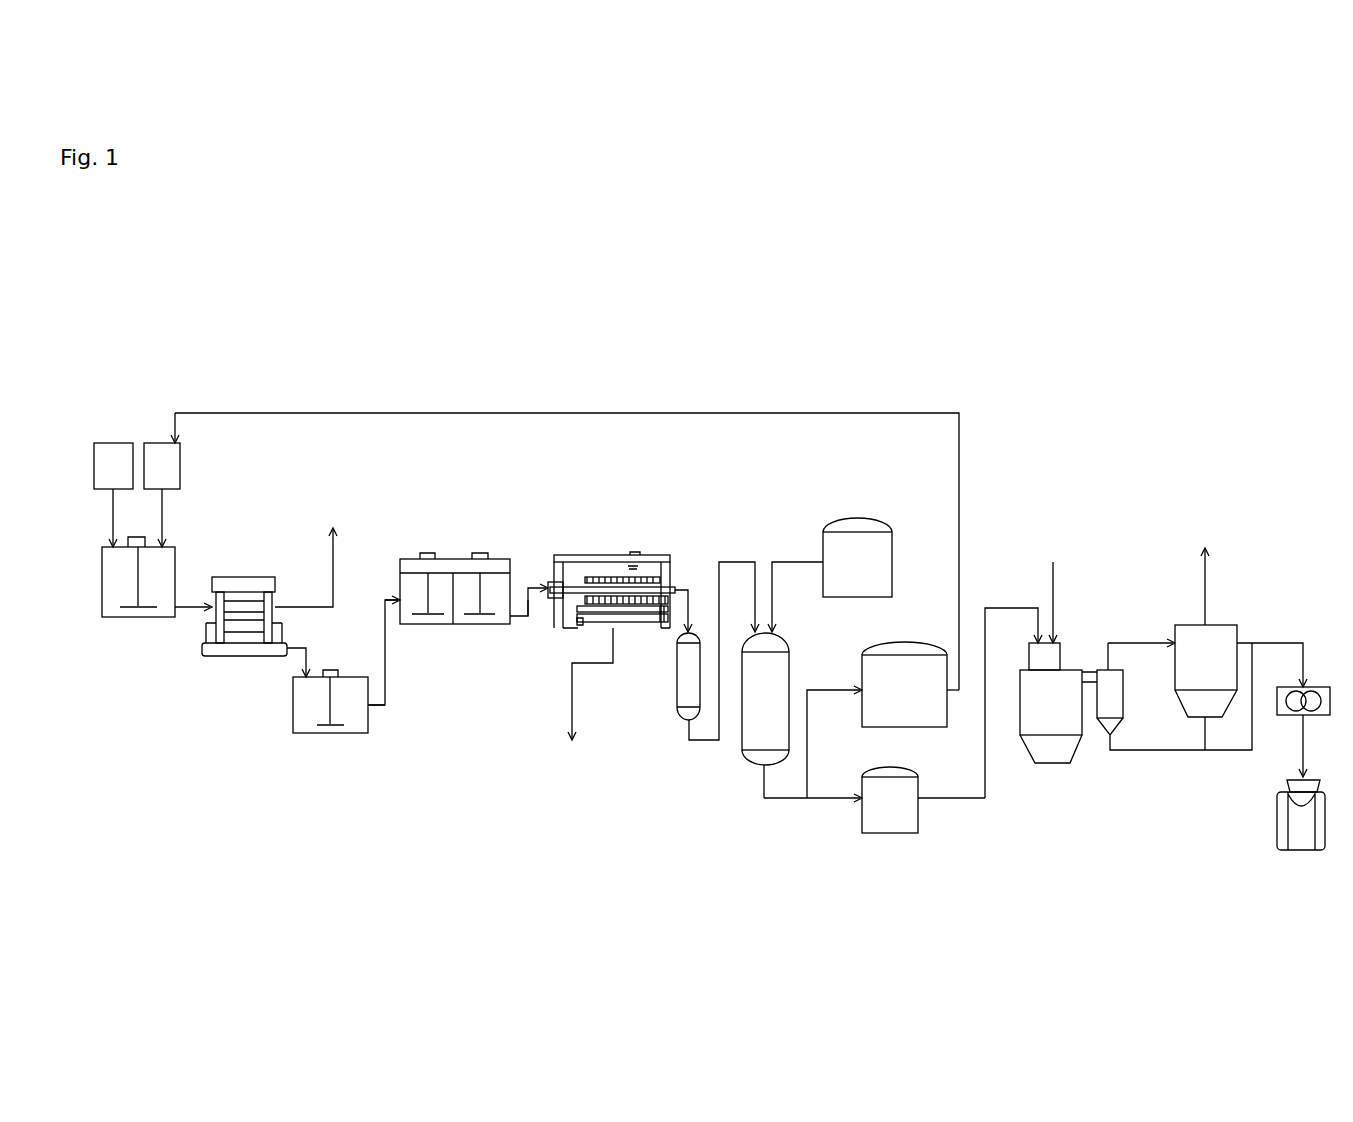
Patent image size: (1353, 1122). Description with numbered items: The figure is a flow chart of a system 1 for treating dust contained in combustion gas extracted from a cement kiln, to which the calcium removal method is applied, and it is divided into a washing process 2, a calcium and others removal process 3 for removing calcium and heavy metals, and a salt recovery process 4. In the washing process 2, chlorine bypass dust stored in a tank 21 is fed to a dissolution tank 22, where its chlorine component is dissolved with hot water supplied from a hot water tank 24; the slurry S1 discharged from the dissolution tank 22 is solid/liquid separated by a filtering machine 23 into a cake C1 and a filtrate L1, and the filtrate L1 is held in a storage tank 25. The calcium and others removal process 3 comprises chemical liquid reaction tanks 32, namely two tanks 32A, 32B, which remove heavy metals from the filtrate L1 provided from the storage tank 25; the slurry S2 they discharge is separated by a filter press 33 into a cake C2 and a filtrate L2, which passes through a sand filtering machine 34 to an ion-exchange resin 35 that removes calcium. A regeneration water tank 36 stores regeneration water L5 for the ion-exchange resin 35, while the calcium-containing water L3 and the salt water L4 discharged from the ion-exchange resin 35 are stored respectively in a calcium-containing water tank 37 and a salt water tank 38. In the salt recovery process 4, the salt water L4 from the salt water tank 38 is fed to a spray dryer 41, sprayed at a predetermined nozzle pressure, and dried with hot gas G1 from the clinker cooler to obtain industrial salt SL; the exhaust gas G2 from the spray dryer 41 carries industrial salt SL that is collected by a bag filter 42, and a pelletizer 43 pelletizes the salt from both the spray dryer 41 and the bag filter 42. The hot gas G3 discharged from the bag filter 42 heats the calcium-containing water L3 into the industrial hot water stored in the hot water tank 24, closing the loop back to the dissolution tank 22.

The system for treating dust contained in extracted cement kiln combustion gas 1 is at (737, 361).
The washing process 2 is at (228, 804).
The calcium and others removal process 3 is at (607, 862).
The salt recovery process 4 is at (1167, 909).
The tank 21 is at (115, 442).
The dissolution tank 22 is at (102, 583).
The filtering machine 23 is at (233, 578).
The hot water tank 24 is at (157, 442).
The storage tank 25 is at (293, 703).
The chemical liquid reaction tanks 32 is at (457, 559).
The chemical liquid reaction tank 32A is at (434, 624).
The chemical liquid reaction tank 32B is at (488, 624).
The filter press 33 is at (591, 557).
The sand filtering machine 34 is at (677, 690).
The ion-exchange resin 35 is at (747, 758).
The regeneration water tank 36 is at (853, 598).
The calcium-containing water tank 37 is at (902, 728).
The salt water tank 38 is at (897, 835).
The spray dryer 41 is at (1050, 765).
The bag filter 42 is at (1240, 632).
The pelletizer 43 is at (1317, 668).
The slurry S1 is at (193, 595).
The cake C1 is at (323, 529).
The filtrate L1 is at (312, 654).
The slurry S2 is at (528, 626).
The filtrate L2 is at (685, 599).
The cake C2 is at (592, 717).
The calcium-containing water L3 is at (834, 732).
The salt water L4 is at (813, 810).
The regeneration water L5 is at (795, 597).
The hot gas G1 is at (1053, 591).
The exhaust gas G2 is at (1141, 634).
The hot gas G3 is at (1234, 548).
The industrial salt SL is at (1233, 816).